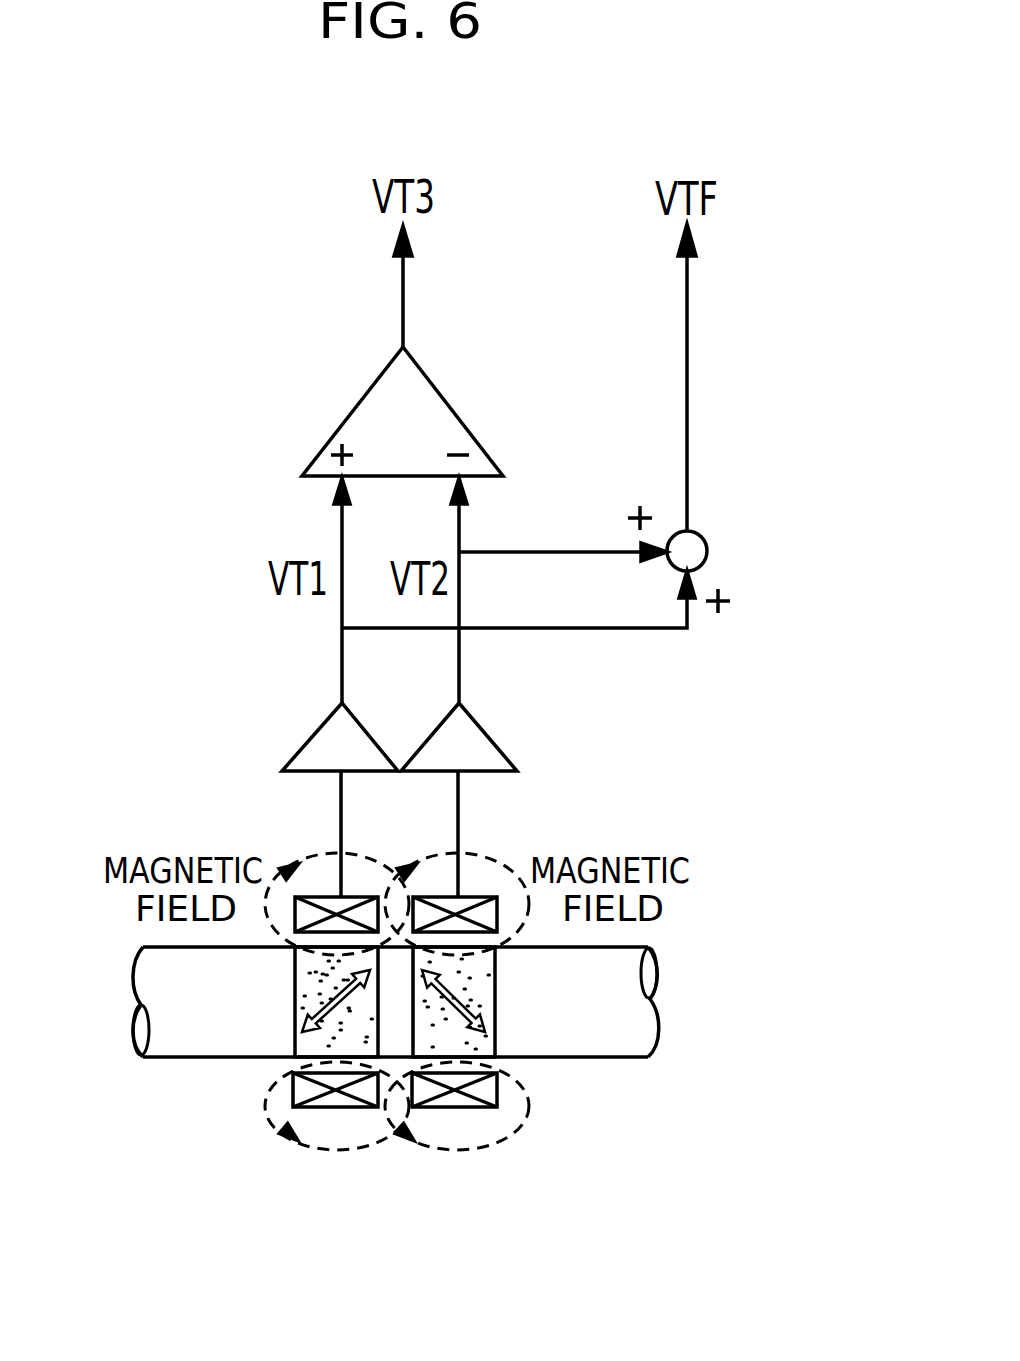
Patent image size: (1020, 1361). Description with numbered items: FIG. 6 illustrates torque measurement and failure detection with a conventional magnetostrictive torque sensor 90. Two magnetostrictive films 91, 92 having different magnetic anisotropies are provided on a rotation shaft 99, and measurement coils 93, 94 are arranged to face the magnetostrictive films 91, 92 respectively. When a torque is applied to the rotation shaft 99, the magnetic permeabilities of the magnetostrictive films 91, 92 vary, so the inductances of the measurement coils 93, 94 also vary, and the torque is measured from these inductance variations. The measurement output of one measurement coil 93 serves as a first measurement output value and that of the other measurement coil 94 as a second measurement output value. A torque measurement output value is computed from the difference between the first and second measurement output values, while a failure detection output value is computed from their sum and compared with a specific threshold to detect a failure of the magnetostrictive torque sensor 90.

The magnetostrictive torque sensor 90 is at (542, 1180).
The magnetostrictive film 91 is at (297, 985).
The magnetostrictive film 92 is at (480, 987).
The measurement coil 93 is at (335, 1107).
The measurement coil 94 is at (458, 1107).
The rotation shaft 99 is at (627, 1058).